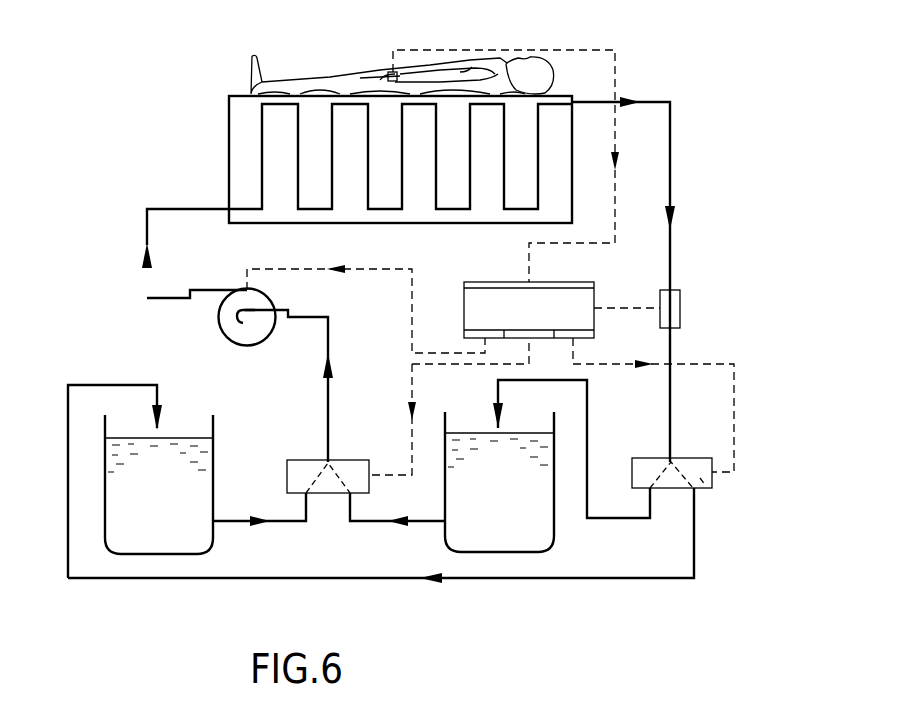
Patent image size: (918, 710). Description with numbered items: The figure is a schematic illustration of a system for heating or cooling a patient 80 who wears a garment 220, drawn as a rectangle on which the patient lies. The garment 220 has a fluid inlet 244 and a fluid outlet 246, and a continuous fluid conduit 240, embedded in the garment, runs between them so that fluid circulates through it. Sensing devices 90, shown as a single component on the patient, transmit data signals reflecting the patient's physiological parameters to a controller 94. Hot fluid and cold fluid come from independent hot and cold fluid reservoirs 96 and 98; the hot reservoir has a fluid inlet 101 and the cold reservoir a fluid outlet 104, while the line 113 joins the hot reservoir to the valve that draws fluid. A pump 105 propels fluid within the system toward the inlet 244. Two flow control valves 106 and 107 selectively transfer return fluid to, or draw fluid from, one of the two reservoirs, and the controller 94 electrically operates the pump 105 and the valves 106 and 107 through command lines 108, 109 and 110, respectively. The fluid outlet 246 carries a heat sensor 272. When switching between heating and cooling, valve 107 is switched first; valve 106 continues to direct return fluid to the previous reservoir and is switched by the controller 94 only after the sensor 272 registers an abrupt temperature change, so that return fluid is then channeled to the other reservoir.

The patient 80 is at (337, 78).
The sensing devices 90 is at (388, 77).
The garment 220 is at (240, 128).
The continuous fluid conduit 240 is at (538, 180).
The fluid inlet 244 is at (192, 208).
The fluid outlet 246 is at (648, 102).
The command line 108 is at (383, 267).
The controller 94 is at (594, 300).
The heat sensor 272 is at (680, 318).
The pump 105 is at (235, 337).
The flow control valve 107 is at (303, 460).
The command line 110 is at (412, 450).
The fluid inlet 101 is at (587, 445).
The command line 109 is at (735, 427).
The flow control valve 106 is at (703, 482).
The fluid outlet 104 is at (235, 522).
The pipe from warm reservoir 113 is at (422, 522).
The cold fluid reservoir 98 is at (167, 535).
The hot fluid reservoir 96 is at (496, 528).